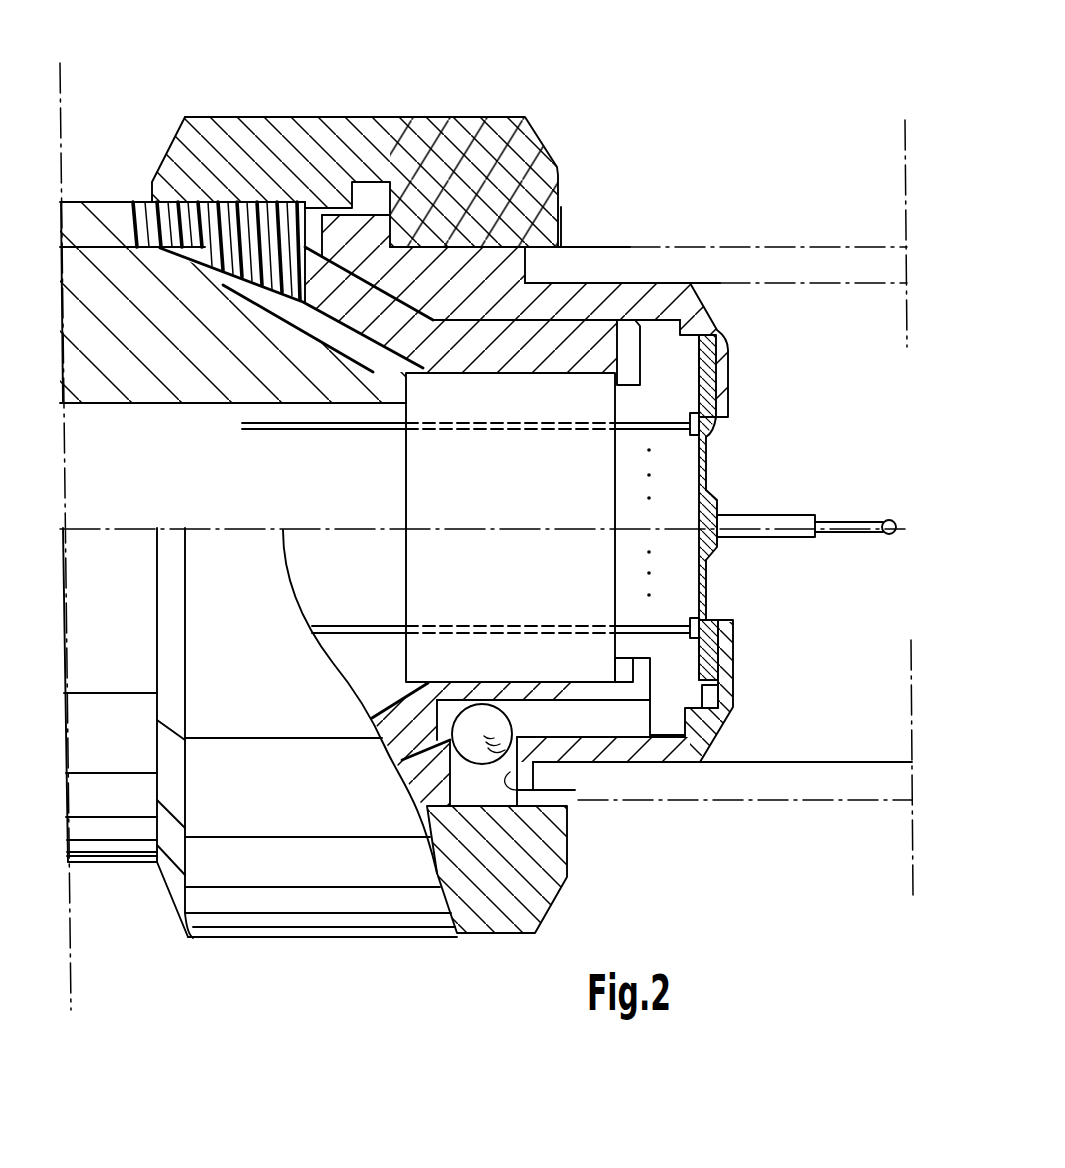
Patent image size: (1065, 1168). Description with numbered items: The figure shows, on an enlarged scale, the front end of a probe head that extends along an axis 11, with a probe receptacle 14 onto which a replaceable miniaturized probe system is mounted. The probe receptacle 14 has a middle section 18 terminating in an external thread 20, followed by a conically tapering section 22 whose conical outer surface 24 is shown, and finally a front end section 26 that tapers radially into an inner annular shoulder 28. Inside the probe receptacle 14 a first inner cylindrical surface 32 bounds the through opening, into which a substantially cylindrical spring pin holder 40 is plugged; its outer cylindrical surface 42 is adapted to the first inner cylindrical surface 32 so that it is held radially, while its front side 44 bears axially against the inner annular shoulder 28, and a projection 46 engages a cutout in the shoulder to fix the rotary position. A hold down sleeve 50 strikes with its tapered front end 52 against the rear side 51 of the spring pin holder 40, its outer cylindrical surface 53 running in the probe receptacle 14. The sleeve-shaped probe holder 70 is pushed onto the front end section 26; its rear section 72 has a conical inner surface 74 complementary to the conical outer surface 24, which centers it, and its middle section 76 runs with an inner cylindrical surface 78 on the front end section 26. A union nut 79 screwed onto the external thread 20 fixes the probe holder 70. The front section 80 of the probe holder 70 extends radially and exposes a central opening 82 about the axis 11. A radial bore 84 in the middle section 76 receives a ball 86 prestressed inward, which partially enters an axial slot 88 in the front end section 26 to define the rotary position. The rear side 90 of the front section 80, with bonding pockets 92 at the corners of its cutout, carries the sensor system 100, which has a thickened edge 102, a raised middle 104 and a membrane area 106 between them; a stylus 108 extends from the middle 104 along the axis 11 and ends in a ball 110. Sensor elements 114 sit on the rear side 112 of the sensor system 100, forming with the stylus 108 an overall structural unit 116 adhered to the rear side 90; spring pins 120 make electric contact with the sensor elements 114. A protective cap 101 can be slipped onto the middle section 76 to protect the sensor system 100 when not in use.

The axis 11 is at (552, 525).
The probe receptacle 14 is at (108, 875).
The middle section 18 is at (102, 197).
The external thread 20 is at (150, 200).
The conically tapering section 22 is at (340, 182).
The conical outer surface 24 is at (382, 222).
The front end section 26 is at (548, 199).
The inner annular shoulder 28 is at (690, 345).
The first inner cylindrical surface 32 is at (445, 378).
The spring pin holder 40 is at (392, 477).
The outer cylindrical surface 42 is at (580, 366).
The front side 44 is at (622, 462).
The projection 46 is at (627, 672).
The hold down sleeve 50 is at (158, 410).
The rear side 51 is at (398, 593).
The tapered front end 52 is at (363, 393).
The outer cylindrical surface 53 is at (95, 244).
The probe holder 70 is at (675, 270).
The rear section 72 is at (490, 345).
The conical inner surface 74 is at (495, 113).
The middle section 76 is at (582, 283).
The inner cylindrical surface 78 is at (603, 283).
The union nut 79 is at (285, 128).
The front section 80 is at (720, 372).
The central opening 82 is at (718, 424).
The radial bore 84 is at (572, 790).
The ball 86 is at (470, 735).
The axial slot 88 is at (604, 734).
The rear side 90 is at (714, 670).
The bonding pockets 92 is at (720, 697).
The sensor system 100 is at (714, 592).
The protective cap 101 is at (833, 266).
The thickened edge 102 is at (704, 403).
The raised middle 104 is at (722, 503).
The membrane area 106 is at (707, 572).
The stylus 108 is at (813, 511).
The ball 110 is at (892, 534).
The rear side 112 is at (707, 457).
The sensor elements 114 is at (680, 610).
The structural unit 116 is at (797, 623).
The spring pins 120 is at (657, 420).